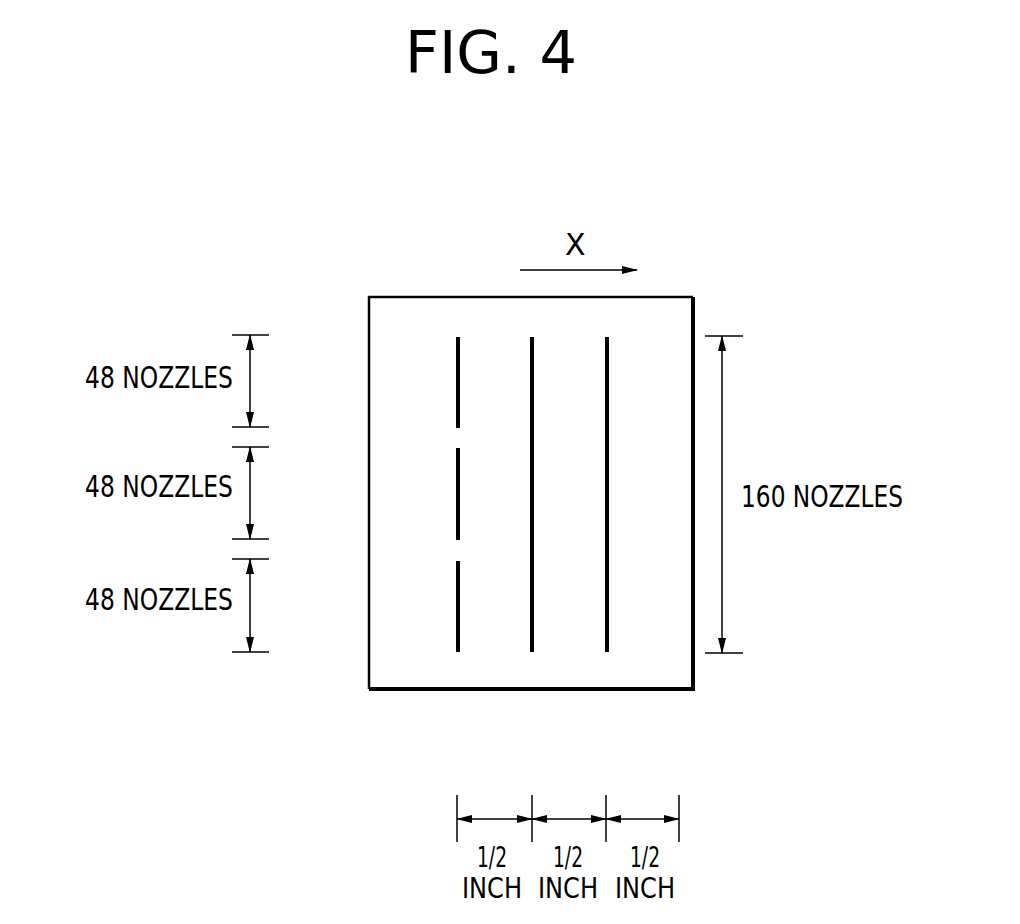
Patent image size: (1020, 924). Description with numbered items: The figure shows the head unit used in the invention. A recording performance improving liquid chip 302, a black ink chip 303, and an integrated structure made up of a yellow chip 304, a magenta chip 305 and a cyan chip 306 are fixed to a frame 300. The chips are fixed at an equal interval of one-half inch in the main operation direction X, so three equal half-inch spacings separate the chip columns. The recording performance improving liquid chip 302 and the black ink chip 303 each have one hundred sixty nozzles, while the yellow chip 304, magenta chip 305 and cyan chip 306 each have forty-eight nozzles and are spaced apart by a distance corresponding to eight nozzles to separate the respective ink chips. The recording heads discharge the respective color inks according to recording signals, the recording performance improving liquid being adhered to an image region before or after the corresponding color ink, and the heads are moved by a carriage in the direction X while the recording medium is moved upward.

The frame 300 is at (662, 297).
The recording performance improving liquid chip 302 is at (607, 625).
The black ink chip 303 is at (532, 625).
The yellow chip 304 is at (458, 388).
The magenta chip 305 is at (458, 498).
The cyan chip 306 is at (458, 612).